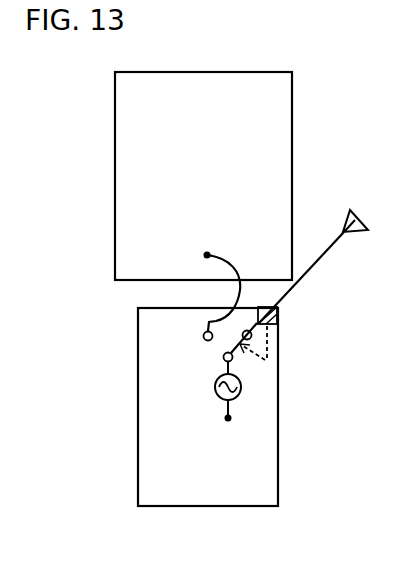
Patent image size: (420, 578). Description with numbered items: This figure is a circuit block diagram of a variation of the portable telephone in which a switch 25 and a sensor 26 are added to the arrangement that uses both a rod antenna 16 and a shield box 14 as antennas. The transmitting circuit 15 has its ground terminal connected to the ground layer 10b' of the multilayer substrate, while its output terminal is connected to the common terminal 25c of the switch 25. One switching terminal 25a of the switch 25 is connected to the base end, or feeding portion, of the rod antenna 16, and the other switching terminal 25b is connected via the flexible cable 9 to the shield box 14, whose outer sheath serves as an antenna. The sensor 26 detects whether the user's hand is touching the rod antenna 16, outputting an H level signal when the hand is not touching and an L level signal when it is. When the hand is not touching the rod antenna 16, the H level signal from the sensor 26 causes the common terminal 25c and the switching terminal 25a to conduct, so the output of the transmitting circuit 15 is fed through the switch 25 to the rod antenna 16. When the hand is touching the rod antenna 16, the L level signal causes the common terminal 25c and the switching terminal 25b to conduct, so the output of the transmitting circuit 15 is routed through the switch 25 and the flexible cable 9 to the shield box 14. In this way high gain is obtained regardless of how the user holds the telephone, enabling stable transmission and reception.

The shield box 14 is at (292, 181).
The ground layer 10b' is at (250, 407).
The rod antenna 16 is at (305, 275).
The sensor 26 is at (277, 316).
The flexible cable 9 is at (236, 291).
The switch 25 is at (216, 348).
The switching terminal 25a is at (253, 339).
The switching terminal 25b is at (203, 336).
The common terminal 25c is at (224, 361).
The transmitting circuit 15 is at (241, 386).